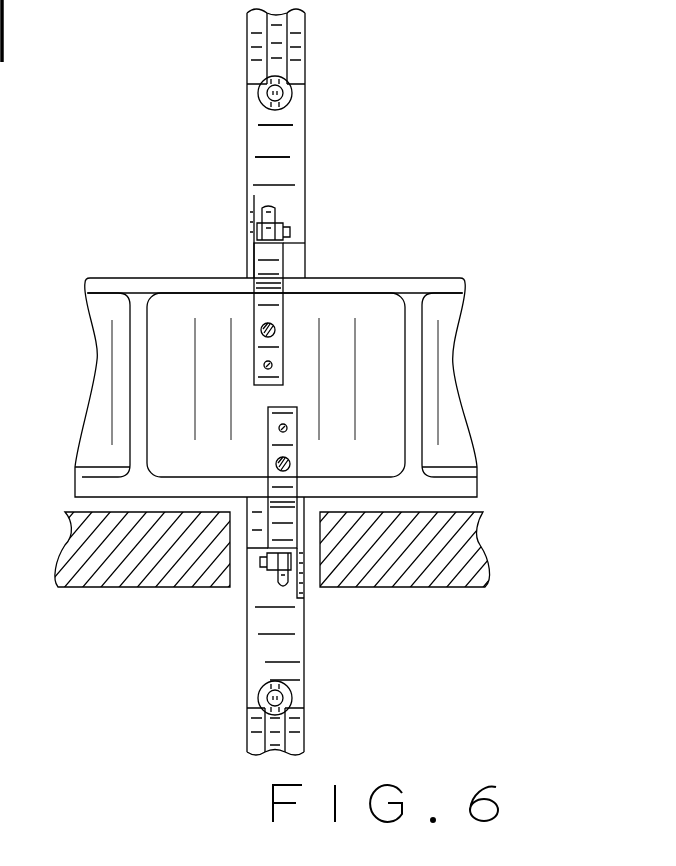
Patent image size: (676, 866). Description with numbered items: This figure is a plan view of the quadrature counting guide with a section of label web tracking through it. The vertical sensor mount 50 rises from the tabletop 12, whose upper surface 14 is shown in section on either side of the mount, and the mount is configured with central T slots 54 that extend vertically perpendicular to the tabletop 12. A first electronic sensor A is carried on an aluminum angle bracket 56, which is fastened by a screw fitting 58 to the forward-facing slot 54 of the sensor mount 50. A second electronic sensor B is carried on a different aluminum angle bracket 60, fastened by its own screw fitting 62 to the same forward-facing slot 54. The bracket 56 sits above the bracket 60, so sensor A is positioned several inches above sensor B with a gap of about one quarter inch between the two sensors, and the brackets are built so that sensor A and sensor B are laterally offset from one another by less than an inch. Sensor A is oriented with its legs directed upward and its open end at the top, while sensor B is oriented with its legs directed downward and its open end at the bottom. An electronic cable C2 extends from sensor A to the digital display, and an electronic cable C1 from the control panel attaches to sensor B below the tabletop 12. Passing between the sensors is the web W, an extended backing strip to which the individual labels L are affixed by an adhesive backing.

The sensor mount 50 is at (305, 70).
The T slot 54 is at (275, 52).
The screw fitting 58 is at (259, 93).
The aluminum angle bracket 56 is at (280, 165).
The electronic cable C2 is at (270, 218).
The first electronic sensor A is at (253, 312).
The second electronic sensor B is at (300, 445).
The electronic cable C1 is at (281, 584).
The aluminum angle bracket 60 is at (290, 648).
The screw fitting 62 is at (288, 695).
The web W is at (136, 284).
The upper surface 14 is at (103, 512).
The labels L is at (177, 340).
The tabletop 12 is at (182, 612).